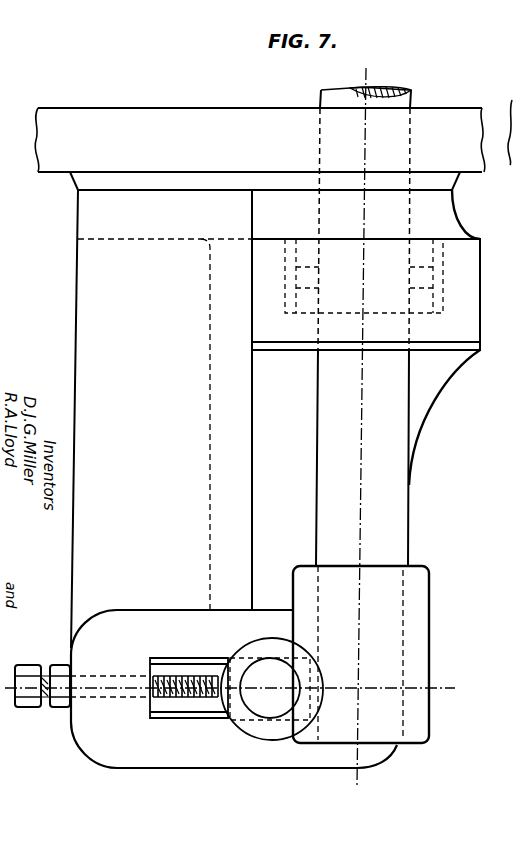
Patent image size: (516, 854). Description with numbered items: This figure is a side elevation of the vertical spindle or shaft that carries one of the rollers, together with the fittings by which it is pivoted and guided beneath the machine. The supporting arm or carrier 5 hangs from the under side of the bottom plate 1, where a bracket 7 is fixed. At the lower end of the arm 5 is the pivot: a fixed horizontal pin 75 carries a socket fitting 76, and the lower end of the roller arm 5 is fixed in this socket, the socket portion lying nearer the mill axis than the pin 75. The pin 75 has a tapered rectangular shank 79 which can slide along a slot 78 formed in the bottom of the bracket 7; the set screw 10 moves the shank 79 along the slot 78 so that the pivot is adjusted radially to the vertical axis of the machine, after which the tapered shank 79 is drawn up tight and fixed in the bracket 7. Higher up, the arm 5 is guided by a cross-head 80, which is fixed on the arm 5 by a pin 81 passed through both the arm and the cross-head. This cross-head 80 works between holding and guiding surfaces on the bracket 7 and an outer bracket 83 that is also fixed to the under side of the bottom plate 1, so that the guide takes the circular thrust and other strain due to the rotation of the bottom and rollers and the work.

The bottom plate 1 is at (113, 117).
The supporting arm or carrier 5 is at (321, 96).
The bracket 7 is at (438, 393).
The set screw 10 is at (168, 680).
The fixed pin 75 is at (263, 675).
The socket fitting 76 is at (416, 614).
The slot 78 is at (183, 672).
The rectangular shank 79 is at (288, 657).
The cross-head 80 is at (436, 252).
The pin 81 is at (302, 277).
The outer bracket 83 is at (468, 313).